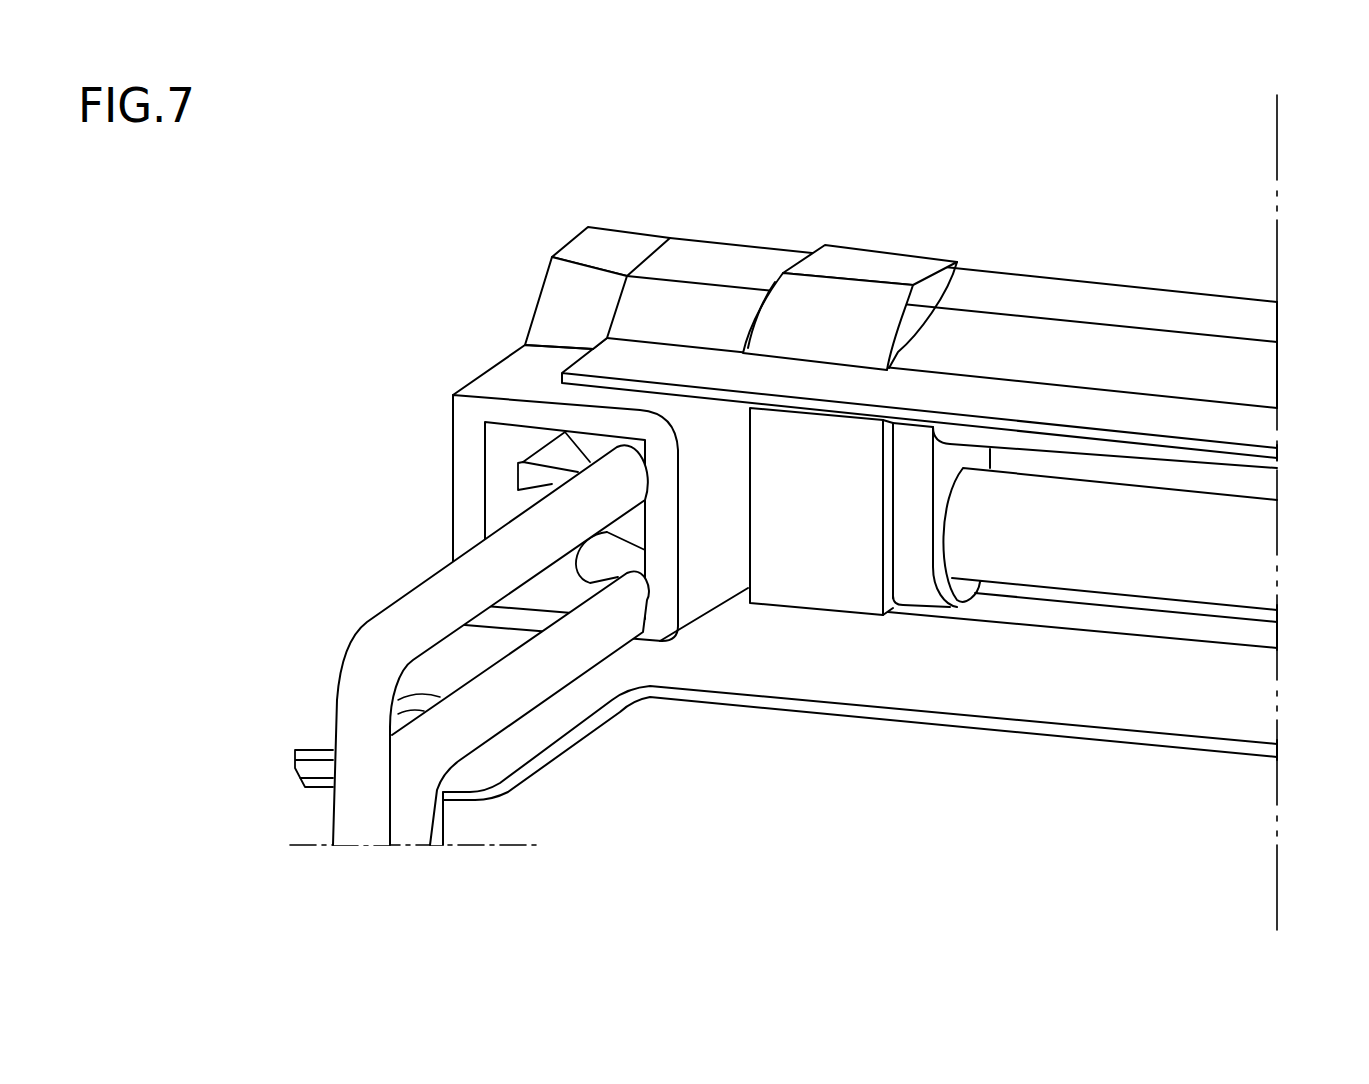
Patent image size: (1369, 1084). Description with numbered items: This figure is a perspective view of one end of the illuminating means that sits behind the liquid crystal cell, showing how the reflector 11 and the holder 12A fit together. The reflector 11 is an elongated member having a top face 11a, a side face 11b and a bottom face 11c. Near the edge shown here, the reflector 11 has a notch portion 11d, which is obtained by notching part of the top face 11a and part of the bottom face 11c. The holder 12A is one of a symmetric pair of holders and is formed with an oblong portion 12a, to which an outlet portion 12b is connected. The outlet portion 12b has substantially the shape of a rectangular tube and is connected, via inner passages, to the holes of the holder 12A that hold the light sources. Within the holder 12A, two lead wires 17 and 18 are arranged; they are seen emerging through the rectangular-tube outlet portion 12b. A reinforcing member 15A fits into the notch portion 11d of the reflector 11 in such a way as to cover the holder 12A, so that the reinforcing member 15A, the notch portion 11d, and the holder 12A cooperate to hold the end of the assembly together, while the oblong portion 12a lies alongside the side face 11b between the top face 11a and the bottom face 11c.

The reflector 11 is at (721, 246).
The top face 11a is at (1153, 310).
The side face 11b is at (1252, 482).
The bottom face 11c is at (1163, 718).
The notch portion 11d is at (817, 367).
The holder 12A is at (553, 294).
The oblong portion 12a is at (913, 585).
The outlet portion 12b is at (470, 452).
The reinforcing member 15A is at (865, 260).
The lead wire 17 is at (532, 682).
The lead wire 18 is at (408, 630).